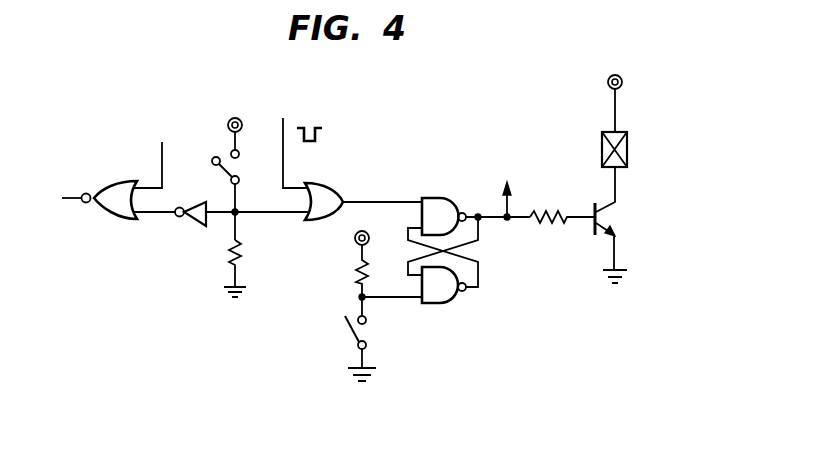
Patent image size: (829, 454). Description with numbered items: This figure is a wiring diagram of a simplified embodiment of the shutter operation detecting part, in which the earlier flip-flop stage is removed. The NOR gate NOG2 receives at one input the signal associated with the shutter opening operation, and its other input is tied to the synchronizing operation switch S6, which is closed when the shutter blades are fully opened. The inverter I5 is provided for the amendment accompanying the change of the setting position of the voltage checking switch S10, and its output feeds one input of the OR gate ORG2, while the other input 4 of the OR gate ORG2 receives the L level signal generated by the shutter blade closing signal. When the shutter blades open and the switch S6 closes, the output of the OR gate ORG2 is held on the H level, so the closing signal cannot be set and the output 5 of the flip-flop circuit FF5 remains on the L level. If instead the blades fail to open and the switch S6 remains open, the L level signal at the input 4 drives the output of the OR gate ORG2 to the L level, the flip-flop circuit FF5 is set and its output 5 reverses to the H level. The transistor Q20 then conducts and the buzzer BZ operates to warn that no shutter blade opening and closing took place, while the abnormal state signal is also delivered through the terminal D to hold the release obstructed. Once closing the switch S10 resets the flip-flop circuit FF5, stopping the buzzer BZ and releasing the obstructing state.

The NOR gate NOG2 is at (118, 180).
The inverter I5 is at (241, 227).
The synchronizing operation switch S6 is at (225, 207).
The OR gate ORG2 is at (352, 169).
The input of the OR gate 4 is at (285, 103).
The flip-flop circuit FF5 is at (446, 267).
The voltage checking switch S10 is at (352, 306).
The input terminal of the OR gate ORG1 D is at (507, 186).
The output of the flip-flop circuit 5 is at (507, 232).
The transistor Q20 is at (589, 225).
The buzzer BZ is at (629, 121).